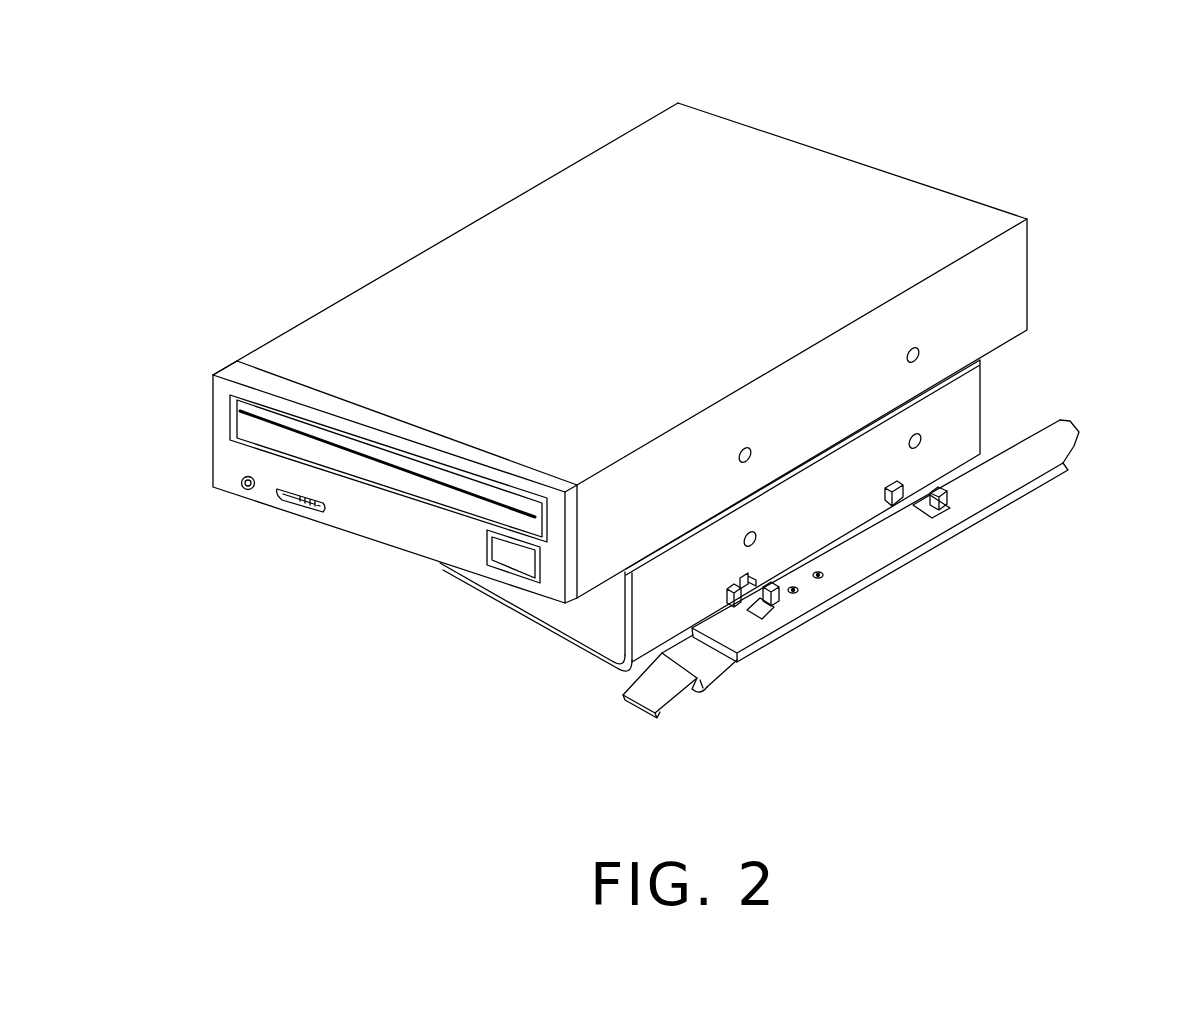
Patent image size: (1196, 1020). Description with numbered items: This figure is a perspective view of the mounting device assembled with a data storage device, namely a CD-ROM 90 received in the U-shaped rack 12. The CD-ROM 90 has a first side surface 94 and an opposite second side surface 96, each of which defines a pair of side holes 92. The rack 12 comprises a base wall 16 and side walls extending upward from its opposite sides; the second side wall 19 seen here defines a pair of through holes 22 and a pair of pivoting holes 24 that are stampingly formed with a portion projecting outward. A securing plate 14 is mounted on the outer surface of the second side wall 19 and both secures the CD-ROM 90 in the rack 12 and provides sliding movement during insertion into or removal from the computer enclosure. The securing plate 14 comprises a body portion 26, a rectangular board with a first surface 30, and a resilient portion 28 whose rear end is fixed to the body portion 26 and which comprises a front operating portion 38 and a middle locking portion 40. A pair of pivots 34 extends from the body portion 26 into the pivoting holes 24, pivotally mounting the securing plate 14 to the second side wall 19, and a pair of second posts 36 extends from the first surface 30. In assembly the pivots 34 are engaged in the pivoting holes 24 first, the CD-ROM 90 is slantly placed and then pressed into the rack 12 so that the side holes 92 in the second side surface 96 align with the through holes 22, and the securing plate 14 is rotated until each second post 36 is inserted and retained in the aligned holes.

The rack 12 is at (568, 641).
The securing plate 14 is at (893, 572).
The base wall 16 is at (565, 618).
The second side wall 19 is at (638, 598).
The through holes 22 is at (924, 436).
The pivoting holes 24 is at (905, 500).
The body portion 26 is at (1040, 478).
The resilient portion 28 is at (723, 672).
The first surface 30 is at (1040, 454).
The pivots 34 is at (893, 484).
The second posts 36 is at (950, 503).
The front operating portion 38 is at (645, 696).
The middle locking portion 40 is at (695, 686).
The CD-ROM 90 is at (795, 177).
The side holes 92 is at (918, 348).
The first side surface 94 is at (497, 208).
The second side surface 96 is at (1003, 291).